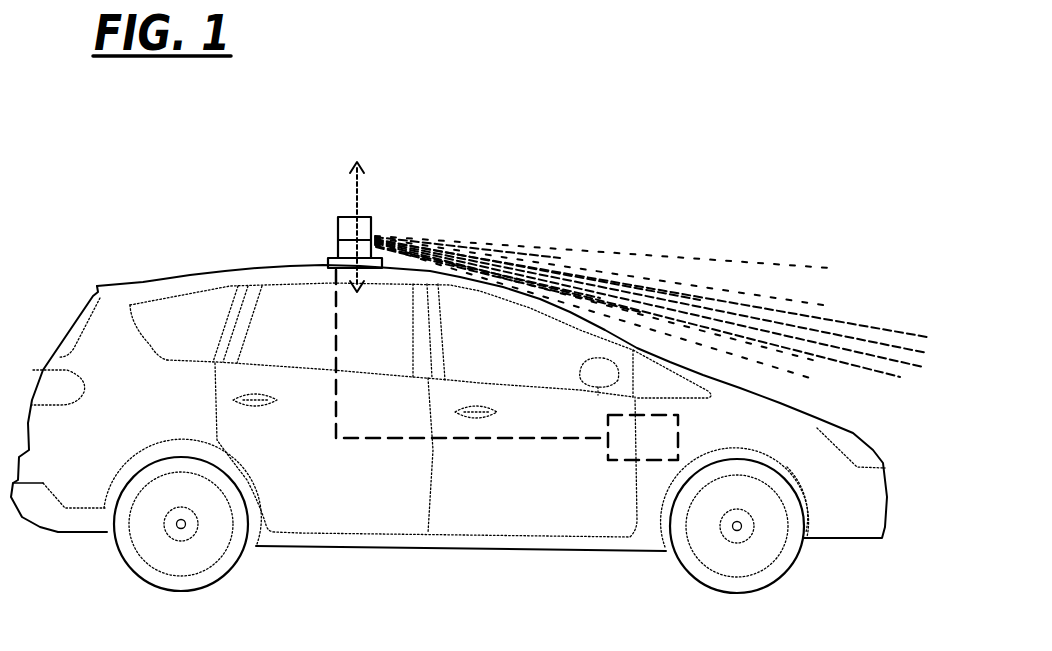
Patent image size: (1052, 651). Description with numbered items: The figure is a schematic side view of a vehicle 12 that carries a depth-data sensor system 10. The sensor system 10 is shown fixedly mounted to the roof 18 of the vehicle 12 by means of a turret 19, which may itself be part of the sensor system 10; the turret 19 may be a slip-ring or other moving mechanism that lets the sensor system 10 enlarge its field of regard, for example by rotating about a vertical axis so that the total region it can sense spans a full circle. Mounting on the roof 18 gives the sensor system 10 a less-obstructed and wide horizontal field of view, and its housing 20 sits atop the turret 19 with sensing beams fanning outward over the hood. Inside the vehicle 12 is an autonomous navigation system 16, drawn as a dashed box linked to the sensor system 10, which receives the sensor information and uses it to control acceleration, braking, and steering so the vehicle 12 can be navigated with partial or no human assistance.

The depth-data sensor system 10 is at (594, 259).
The vehicle 12 is at (449, 417).
The autonomous navigation system 16 is at (657, 448).
The roof 18 is at (181, 277).
The turret 19 is at (330, 261).
The housing 20 is at (338, 232).